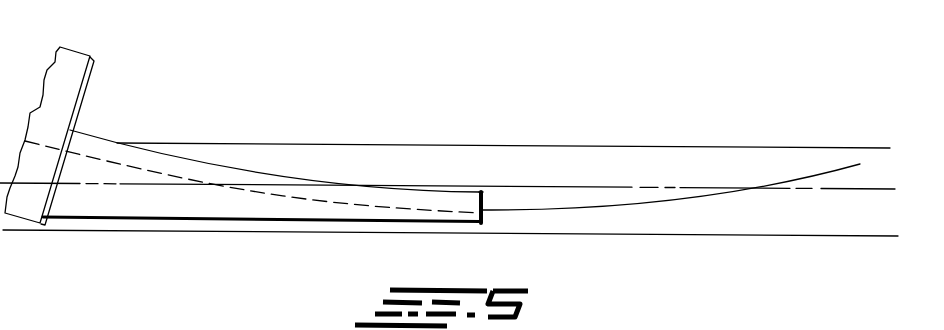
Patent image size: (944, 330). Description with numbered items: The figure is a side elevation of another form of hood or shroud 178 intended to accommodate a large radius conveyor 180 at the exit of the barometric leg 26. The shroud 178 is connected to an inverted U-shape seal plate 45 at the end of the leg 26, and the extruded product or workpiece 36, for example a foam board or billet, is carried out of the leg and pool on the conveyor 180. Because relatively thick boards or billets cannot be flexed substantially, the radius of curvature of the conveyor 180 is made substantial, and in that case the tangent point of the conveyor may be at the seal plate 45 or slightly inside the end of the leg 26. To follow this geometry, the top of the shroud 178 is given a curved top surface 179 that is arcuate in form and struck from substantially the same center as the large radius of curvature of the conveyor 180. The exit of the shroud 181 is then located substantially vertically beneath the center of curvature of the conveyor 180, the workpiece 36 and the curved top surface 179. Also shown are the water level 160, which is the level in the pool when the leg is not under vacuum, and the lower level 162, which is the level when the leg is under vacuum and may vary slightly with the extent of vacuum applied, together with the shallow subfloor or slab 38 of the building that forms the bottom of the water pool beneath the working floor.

The leg 26 is at (67, 55).
The seal plate 45 is at (86, 96).
The curved top surface 179 is at (180, 157).
The shroud 178 is at (311, 177).
The conveyor 180 is at (305, 203).
The exit of the shroud 181 is at (487, 202).
The water level 160 is at (658, 145).
The water level 162 is at (634, 187).
The extruded product 36 is at (732, 197).
The subfloor 38 is at (687, 236).